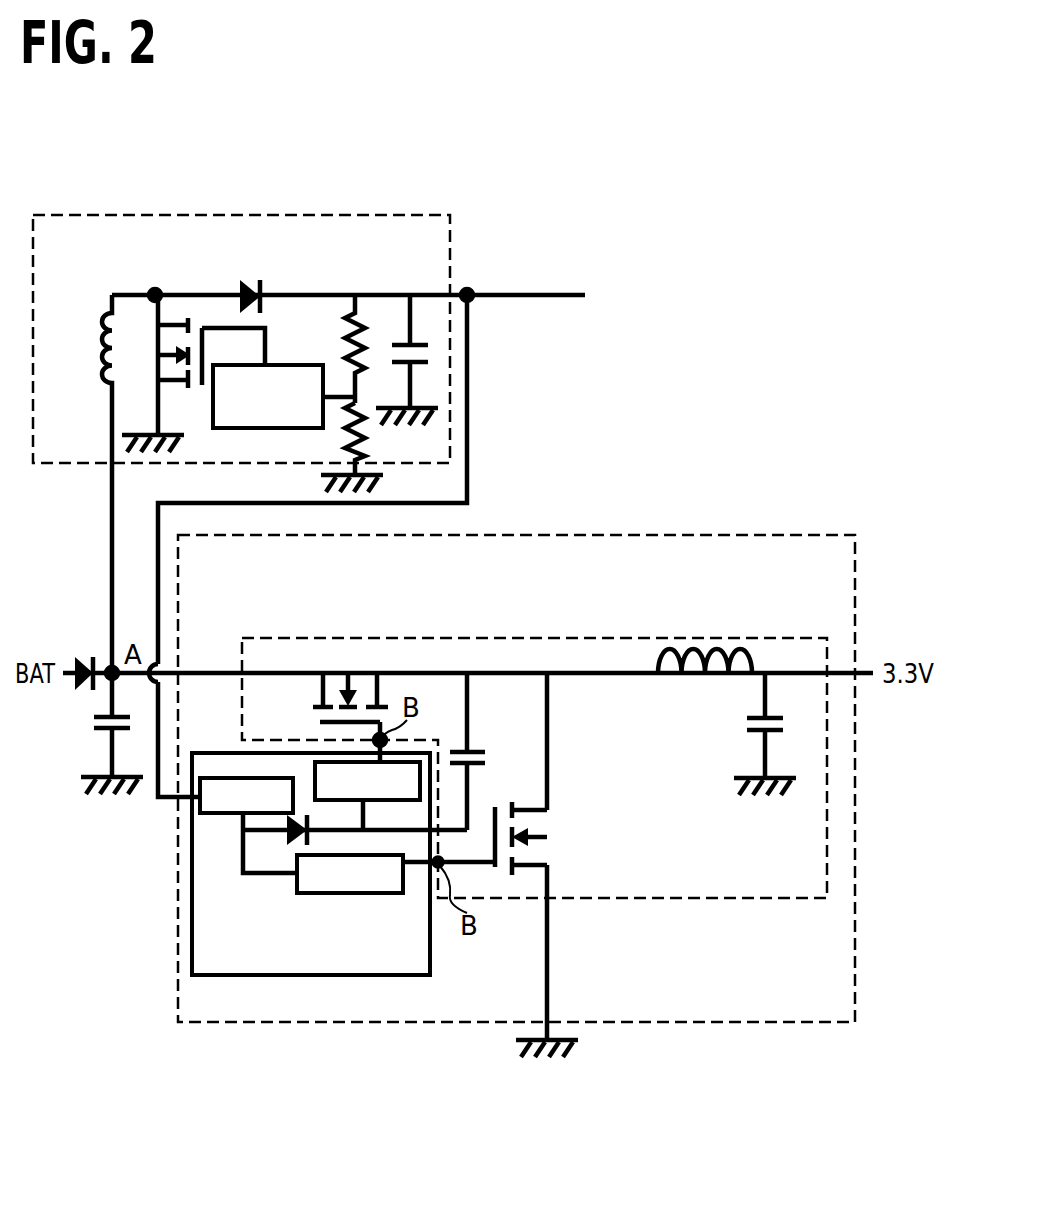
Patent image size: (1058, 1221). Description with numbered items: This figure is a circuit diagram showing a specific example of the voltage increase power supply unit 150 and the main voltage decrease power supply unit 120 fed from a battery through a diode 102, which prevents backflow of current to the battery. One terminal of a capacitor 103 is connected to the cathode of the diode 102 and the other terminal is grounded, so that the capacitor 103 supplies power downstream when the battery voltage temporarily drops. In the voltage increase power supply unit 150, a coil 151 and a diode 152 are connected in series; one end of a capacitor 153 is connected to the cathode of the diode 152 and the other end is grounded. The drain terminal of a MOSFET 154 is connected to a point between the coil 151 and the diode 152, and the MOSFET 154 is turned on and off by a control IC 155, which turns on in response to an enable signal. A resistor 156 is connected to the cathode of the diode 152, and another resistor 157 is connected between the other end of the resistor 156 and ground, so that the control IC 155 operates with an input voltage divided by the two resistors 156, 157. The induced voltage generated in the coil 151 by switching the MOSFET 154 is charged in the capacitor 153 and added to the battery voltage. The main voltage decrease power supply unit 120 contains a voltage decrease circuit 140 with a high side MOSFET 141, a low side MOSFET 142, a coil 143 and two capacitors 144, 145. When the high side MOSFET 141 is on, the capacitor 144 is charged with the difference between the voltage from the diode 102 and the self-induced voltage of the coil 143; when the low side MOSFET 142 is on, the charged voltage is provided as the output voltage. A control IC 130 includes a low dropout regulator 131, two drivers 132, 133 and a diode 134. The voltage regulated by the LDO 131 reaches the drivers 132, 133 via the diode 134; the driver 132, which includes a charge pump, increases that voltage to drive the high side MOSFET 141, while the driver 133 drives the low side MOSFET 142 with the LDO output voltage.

The diode 102 is at (88, 658).
The capacitor 103 is at (100, 732).
The main voltage decrease power supply unit 120 is at (757, 535).
The control IC 130 is at (373, 976).
The low dropout (LDO) 131 is at (222, 813).
The driver 132 is at (338, 762).
The driver 133 is at (392, 895).
The diode 134 is at (285, 843).
The voltage decrease circuit 140 is at (715, 638).
The high side MOSFET 141 is at (355, 663).
The low side MOSFET 142 is at (548, 828).
The coil 143 is at (703, 673).
The capacitor 144 is at (757, 732).
The capacitor 145 is at (473, 752).
The voltage increase power supply unit 150 is at (353, 215).
The coil 151 is at (90, 340).
The diode 152 is at (263, 281).
The capacitor 153 is at (428, 355).
The MOSFET 154 is at (188, 318).
The control IC 155 is at (283, 365).
The resistor 156 is at (363, 314).
The resistor 157 is at (345, 454).